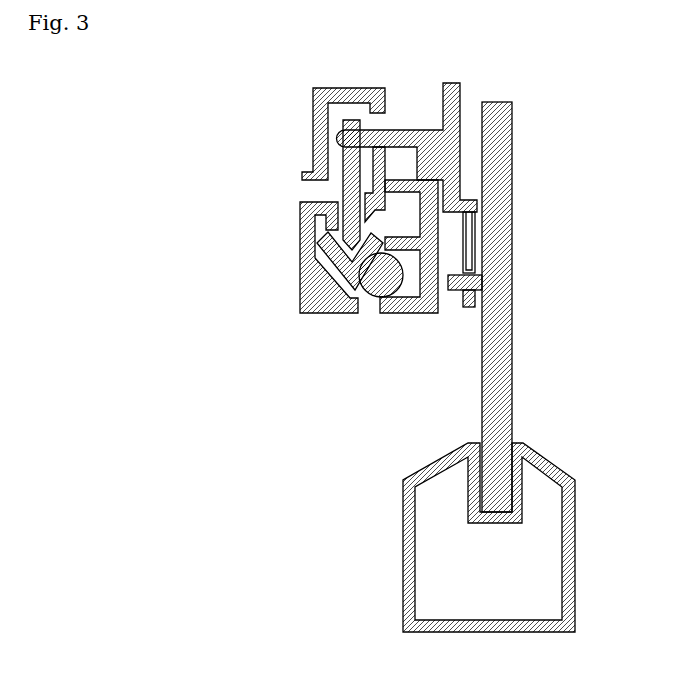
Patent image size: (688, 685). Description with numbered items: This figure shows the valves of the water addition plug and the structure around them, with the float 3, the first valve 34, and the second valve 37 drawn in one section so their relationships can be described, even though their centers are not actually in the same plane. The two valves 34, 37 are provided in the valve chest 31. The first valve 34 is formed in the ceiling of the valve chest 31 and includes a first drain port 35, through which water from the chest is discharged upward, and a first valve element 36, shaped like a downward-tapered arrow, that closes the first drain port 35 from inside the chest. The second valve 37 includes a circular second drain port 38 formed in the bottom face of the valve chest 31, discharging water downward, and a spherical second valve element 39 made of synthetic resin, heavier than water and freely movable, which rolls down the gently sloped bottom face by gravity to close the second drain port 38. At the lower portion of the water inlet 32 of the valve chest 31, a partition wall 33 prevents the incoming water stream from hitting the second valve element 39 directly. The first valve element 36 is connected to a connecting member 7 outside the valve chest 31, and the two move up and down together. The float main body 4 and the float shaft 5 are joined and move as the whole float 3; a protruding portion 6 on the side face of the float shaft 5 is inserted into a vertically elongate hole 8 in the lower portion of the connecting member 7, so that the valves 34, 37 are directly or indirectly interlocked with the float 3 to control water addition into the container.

The float 3 is at (540, 372).
The float main body 4 is at (548, 452).
The float shaft 5 is at (497, 316).
The protruding portion 6 is at (458, 296).
The connecting member 7 is at (462, 100).
The elongate hole 8 is at (468, 242).
The valve chest 31 is at (330, 266).
The water inlet 32 is at (398, 205).
The partition wall 33 is at (405, 262).
The first valve 34 is at (284, 276).
The first drain port 35 is at (333, 203).
The first valve element 36 is at (330, 222).
The second valve 37 is at (284, 315).
The second drain port 38 is at (372, 308).
The second valve element 39 is at (300, 313).